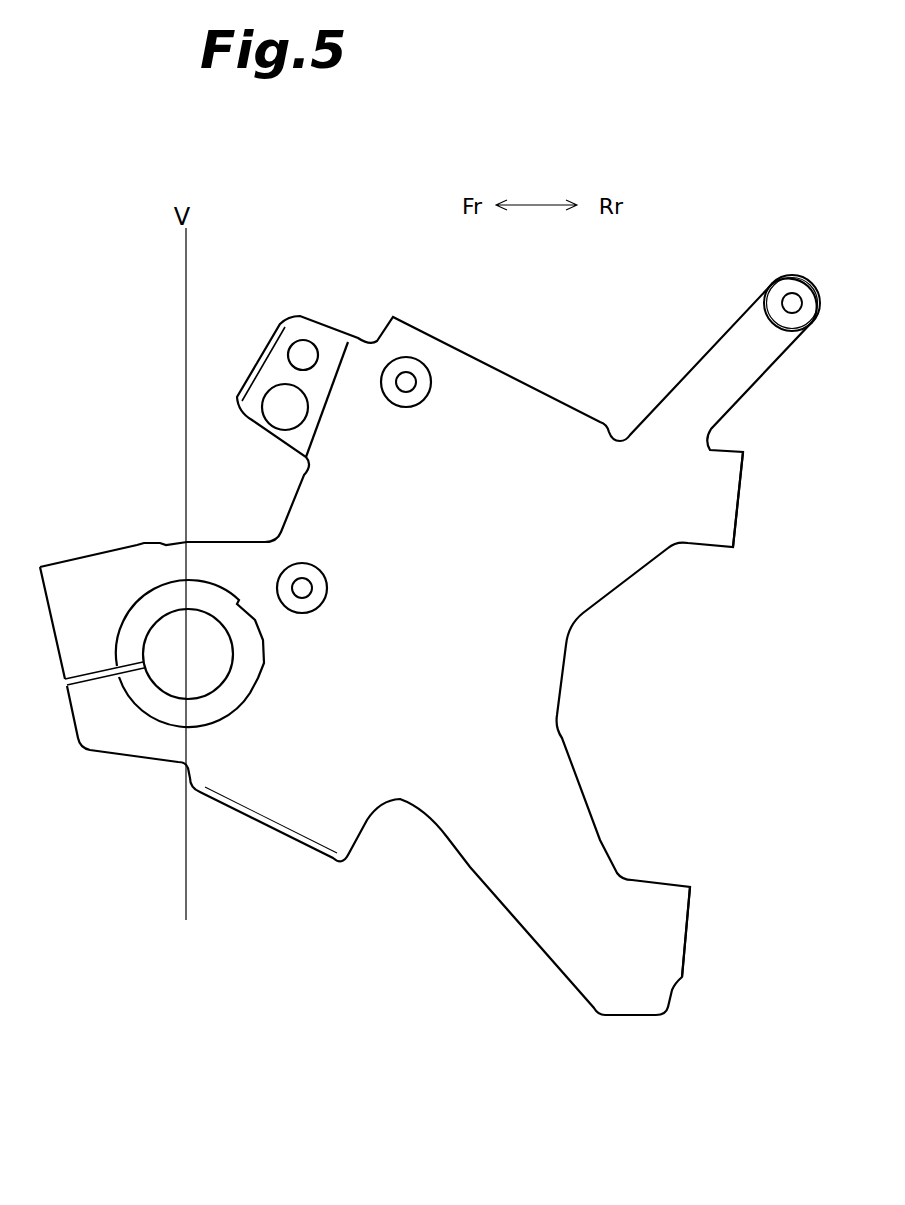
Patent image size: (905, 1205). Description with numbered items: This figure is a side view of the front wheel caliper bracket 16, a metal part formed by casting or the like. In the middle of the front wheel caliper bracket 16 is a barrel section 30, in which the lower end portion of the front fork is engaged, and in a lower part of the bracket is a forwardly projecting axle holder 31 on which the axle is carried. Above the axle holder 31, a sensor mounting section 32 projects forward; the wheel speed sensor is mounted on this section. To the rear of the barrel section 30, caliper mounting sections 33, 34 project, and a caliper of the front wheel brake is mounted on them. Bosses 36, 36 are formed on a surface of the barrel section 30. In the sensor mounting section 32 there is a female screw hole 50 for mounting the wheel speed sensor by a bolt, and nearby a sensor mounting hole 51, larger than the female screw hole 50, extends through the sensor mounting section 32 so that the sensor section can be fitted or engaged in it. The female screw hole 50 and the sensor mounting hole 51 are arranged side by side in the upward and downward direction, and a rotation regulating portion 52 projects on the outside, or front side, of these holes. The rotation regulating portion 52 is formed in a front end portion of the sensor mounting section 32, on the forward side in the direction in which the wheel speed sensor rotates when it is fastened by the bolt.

The front wheel caliper bracket 16 is at (572, 430).
The barrel section 30 is at (498, 392).
The axle holder 31 is at (105, 728).
The sensor mounting section 32 is at (337, 328).
The caliper mounting section 33 is at (731, 501).
The caliper mounting section 34 is at (681, 930).
The boss 36 is at (407, 377).
The female screw hole 50 is at (303, 348).
The sensor mounting hole 51 is at (280, 418).
The rotation regulating portion 52 is at (252, 352).